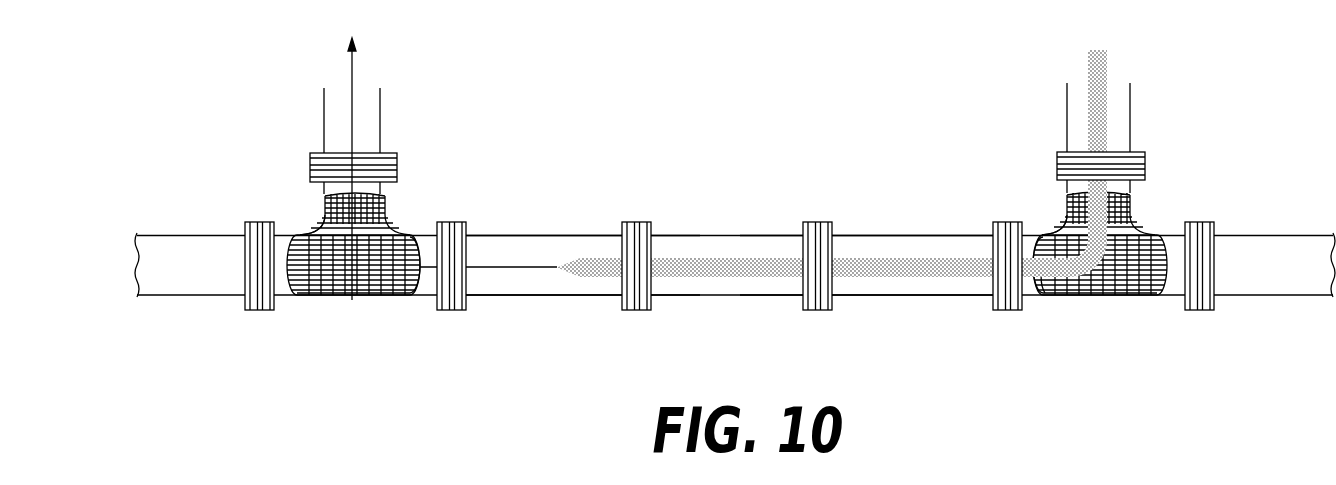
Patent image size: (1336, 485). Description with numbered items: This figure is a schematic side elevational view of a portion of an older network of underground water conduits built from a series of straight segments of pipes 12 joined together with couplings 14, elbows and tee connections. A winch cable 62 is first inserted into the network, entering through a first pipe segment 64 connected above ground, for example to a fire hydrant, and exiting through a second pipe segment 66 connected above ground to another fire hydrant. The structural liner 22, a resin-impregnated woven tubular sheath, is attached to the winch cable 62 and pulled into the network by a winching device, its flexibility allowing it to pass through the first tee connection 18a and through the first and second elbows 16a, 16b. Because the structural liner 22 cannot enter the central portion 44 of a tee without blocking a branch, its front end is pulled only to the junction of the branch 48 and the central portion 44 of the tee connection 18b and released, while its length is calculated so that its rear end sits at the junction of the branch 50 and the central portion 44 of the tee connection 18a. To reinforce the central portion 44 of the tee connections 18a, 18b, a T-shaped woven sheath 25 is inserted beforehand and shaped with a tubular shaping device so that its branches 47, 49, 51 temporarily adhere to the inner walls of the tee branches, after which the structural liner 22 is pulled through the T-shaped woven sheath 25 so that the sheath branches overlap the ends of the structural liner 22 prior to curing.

The pipe 12 is at (188, 236).
The coupling 14 is at (458, 222).
The first elbow 16a is at (770, 244).
The second elbow 16b is at (676, 244).
The first tee connection 18a is at (1055, 251).
The tee connection 18b is at (379, 267).
The structural liner 22 is at (908, 276).
The T-shaped woven sheath 25 is at (305, 238).
The central portion 44 is at (397, 212).
The branch of the T-shaped woven sheath 47 is at (1072, 197).
The branch 48 is at (417, 300).
The branch of the T-shaped woven sheath 49 is at (391, 297).
The branch 50 is at (1076, 297).
The branch of the T-shaped woven sheath 51 is at (1043, 293).
The winch cable 62 is at (352, 63).
The first pipe segment 64 is at (1122, 107).
The second pipe segment 66 is at (330, 118).